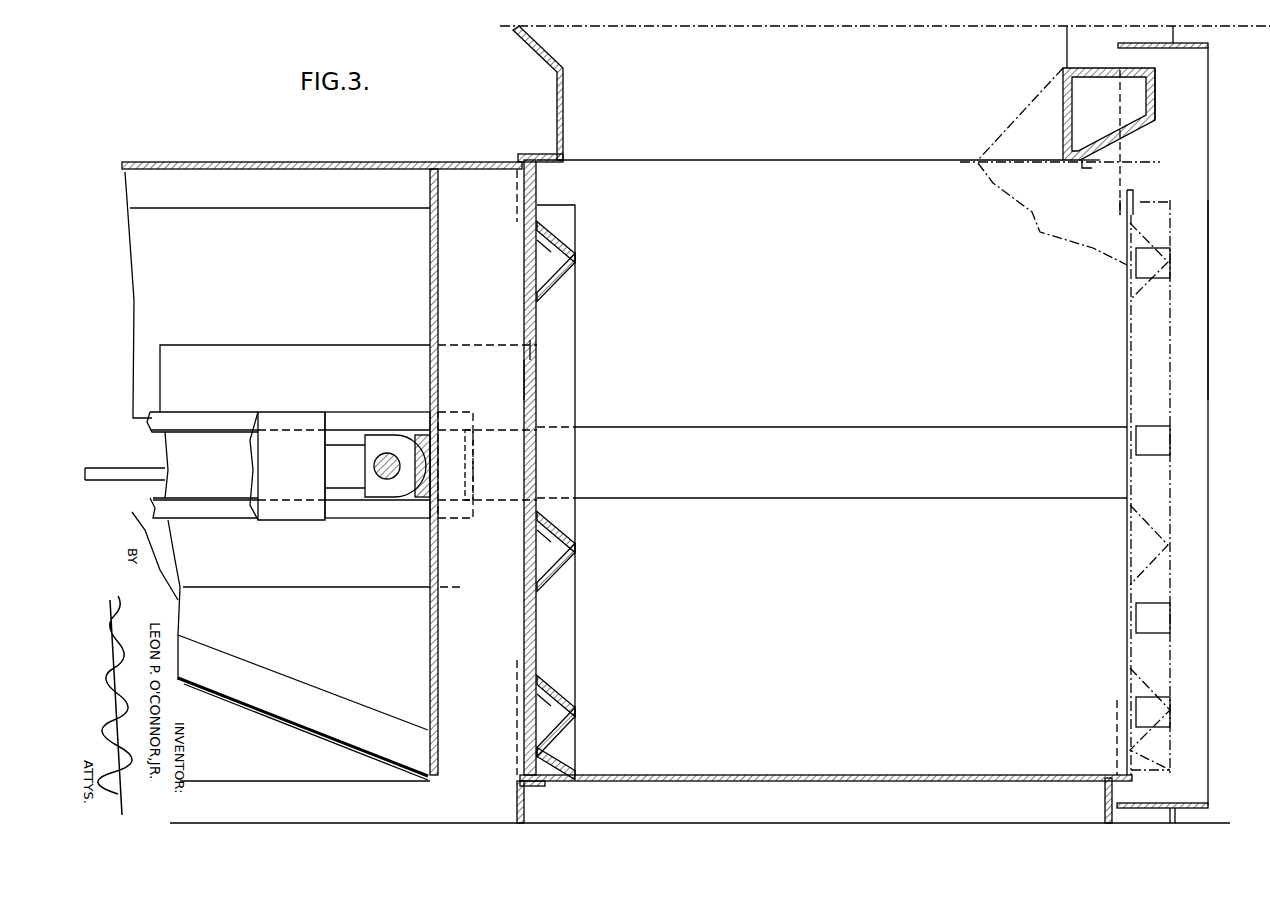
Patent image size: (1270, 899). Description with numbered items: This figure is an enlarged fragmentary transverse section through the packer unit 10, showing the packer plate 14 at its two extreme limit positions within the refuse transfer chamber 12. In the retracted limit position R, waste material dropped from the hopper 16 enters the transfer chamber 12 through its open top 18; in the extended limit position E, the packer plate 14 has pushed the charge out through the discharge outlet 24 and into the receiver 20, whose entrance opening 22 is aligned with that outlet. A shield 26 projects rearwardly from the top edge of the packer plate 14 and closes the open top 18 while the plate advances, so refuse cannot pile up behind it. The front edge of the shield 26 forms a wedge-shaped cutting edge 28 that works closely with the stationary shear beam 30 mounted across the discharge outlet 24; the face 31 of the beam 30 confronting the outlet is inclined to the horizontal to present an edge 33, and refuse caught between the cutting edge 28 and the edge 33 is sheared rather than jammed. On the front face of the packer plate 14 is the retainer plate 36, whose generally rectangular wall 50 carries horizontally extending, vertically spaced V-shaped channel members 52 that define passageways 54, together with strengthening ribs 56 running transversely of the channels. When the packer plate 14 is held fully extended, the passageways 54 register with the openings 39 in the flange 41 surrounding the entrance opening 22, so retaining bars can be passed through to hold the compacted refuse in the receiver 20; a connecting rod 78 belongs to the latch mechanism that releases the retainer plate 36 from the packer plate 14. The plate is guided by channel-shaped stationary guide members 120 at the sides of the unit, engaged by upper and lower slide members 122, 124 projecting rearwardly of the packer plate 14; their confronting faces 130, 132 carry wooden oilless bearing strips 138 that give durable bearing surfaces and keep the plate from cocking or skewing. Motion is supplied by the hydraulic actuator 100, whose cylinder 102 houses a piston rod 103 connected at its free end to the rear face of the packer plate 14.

The packer unit 10 is at (452, 160).
The refuse transfer chamber 12 is at (945, 778).
The packer plate 14 is at (524, 182).
The hopper 16 is at (546, 56).
The open top 18 is at (822, 159).
The receiver 20 is at (1208, 58).
The entrance opening 22 is at (1120, 44).
The discharge outlet 24 is at (1082, 166).
The shield 26 is at (378, 149).
The wedge-shaped cutting edge 28 is at (546, 166).
The stationary beam 30 is at (1160, 105).
The face of the shear beam 31 is at (1154, 128).
The edge 33 is at (1083, 166).
The retainer plate 36 is at (537, 312).
The openings 39 is at (1150, 248).
The flange 41 is at (1200, 204).
The rectangular wall 50 is at (544, 380).
The V-shaped channel members 52 is at (541, 278).
The passageways 54 is at (552, 250).
The strengthening ribs 56 is at (576, 490).
The connecting rod 78 is at (98, 466).
The hydraulic actuator 100 is at (302, 410).
The cylinder 102 is at (305, 520).
The piston rod 103 is at (348, 444).
The stationary guide members 120 is at (170, 446).
The upper slide member 122 is at (332, 345).
The lower slide member 124 is at (353, 588).
The confronting face of the upper slide member 130 is at (393, 414).
The confronting face of the lower slide member 132 is at (400, 520).
The oilless bearing strips 138 is at (178, 420).
The extended limit position E is at (1122, 212).
The retracted limit position R is at (537, 350).